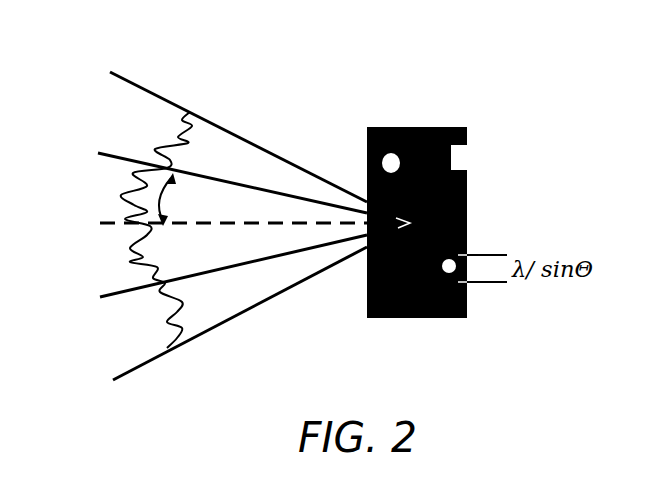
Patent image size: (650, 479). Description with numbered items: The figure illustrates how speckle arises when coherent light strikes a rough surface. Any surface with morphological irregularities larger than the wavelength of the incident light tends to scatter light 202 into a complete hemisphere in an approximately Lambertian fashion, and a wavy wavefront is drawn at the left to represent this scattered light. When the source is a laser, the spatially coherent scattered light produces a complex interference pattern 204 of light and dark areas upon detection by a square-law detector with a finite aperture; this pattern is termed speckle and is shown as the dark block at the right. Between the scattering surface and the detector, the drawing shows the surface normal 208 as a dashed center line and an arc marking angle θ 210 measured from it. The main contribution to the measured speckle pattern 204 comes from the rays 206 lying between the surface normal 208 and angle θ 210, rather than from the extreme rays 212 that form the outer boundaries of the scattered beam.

The light 202 is at (120, 195).
The interference pattern 204 is at (446, 126).
The rays 206 is at (186, 173).
The surface normal 208 is at (99, 225).
The angle θ 210 is at (203, 202).
The extreme rays 212 is at (229, 128).